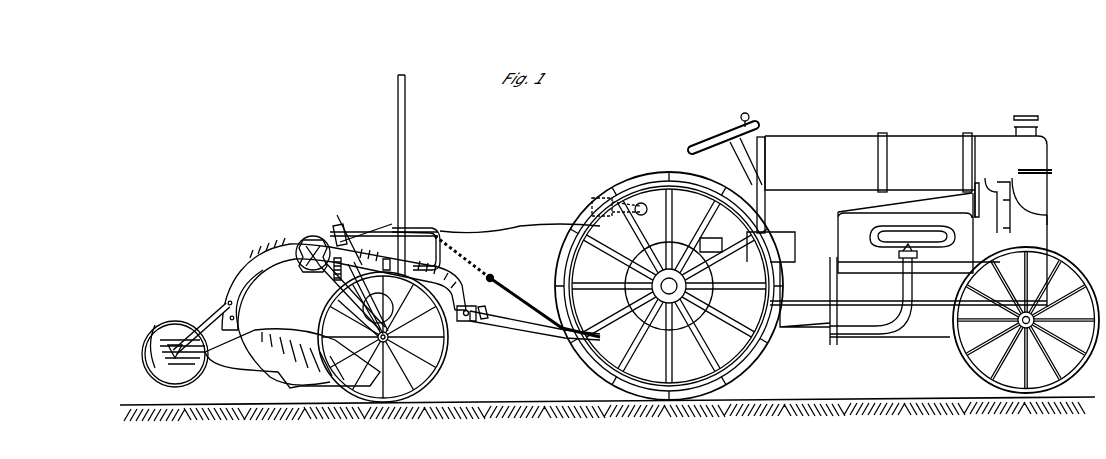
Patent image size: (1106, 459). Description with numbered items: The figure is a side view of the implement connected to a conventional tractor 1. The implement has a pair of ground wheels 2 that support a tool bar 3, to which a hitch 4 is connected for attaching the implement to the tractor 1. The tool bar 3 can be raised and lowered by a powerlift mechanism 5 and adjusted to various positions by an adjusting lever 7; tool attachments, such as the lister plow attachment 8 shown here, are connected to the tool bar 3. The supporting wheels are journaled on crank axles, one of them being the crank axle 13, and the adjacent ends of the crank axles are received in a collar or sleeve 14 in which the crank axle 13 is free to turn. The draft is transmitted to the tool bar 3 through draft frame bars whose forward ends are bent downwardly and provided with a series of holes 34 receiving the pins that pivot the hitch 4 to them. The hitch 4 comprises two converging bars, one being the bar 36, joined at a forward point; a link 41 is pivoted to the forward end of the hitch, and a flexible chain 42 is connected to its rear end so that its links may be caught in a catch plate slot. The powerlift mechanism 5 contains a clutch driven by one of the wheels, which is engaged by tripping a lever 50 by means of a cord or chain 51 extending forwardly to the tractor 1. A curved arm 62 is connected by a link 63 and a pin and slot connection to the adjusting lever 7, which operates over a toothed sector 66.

The tractor 1 is at (828, 146).
The ground wheels 2 is at (452, 362).
The tool bar 3 is at (305, 250).
The hitch 4 is at (498, 316).
The powerlift mechanism 5 is at (398, 248).
The adjusting lever 7 is at (406, 150).
The plow beam 8 is at (228, 277).
The crank axle 13 is at (330, 292).
The collar or sleeve 14 is at (322, 280).
The holes 34 is at (468, 298).
The hitch bar 36 is at (532, 328).
The link 41 is at (526, 318).
The flexible chain 42 is at (470, 268).
The lever 50 is at (338, 226).
The cord or chain 51 is at (515, 221).
The curved arm 62 is at (312, 238).
The link 63 is at (358, 232).
The toothed sector 66 is at (402, 224).